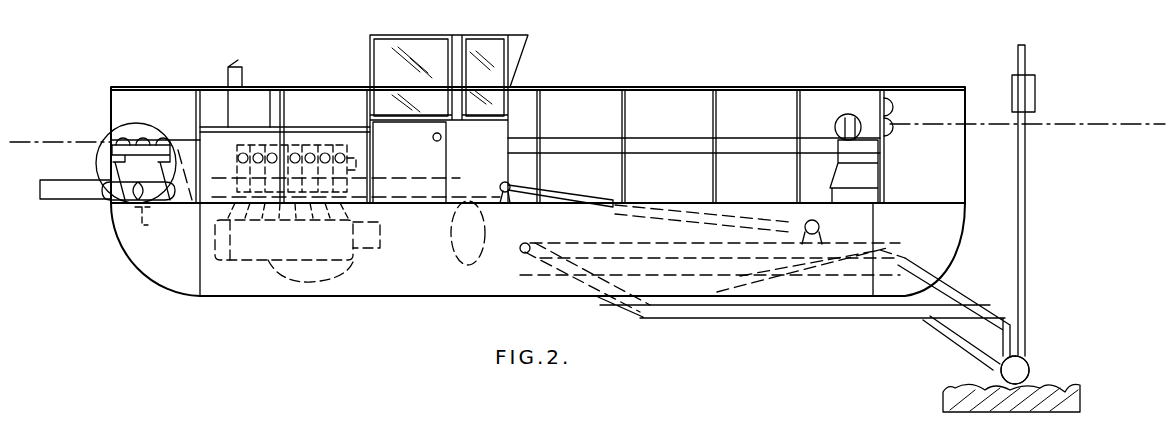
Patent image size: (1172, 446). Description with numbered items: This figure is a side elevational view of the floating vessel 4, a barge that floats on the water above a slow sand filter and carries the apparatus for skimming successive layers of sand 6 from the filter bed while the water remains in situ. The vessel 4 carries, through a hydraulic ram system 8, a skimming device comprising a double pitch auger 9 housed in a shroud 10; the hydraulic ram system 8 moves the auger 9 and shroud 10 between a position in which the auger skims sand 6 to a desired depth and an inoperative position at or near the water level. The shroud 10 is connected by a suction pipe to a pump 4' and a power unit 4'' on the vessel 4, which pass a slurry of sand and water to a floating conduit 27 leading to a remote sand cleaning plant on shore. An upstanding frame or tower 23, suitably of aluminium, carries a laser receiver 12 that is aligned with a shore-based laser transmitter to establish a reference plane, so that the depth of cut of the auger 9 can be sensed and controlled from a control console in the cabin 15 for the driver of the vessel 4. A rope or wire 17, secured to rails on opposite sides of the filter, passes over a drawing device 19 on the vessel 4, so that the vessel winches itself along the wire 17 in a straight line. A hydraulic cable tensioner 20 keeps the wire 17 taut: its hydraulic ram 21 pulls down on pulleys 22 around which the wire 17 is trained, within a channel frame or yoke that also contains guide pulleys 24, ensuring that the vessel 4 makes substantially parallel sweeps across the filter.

The vessel 4 is at (538, 199).
The pump 4' is at (448, 270).
The power unit 4'' is at (283, 279).
The sand 6 is at (948, 398).
The hydraulic ram system 8 is at (760, 320).
The double pitch auger 9 is at (1018, 368).
The shroud 10 is at (1015, 370).
The laser receiver 12 is at (1036, 92).
The cabin 15 is at (366, 54).
The rope or wire 17 is at (1140, 90).
The drawing device 19 is at (858, 118).
The hydraulic cable tensioner 20 is at (162, 135).
The hydraulic ram 21 is at (145, 222).
The pulleys 22 is at (125, 186).
The upstanding frame or tower 23 is at (1027, 196).
The guide pulleys 24 is at (162, 140).
The floating conduit 27 is at (55, 200).